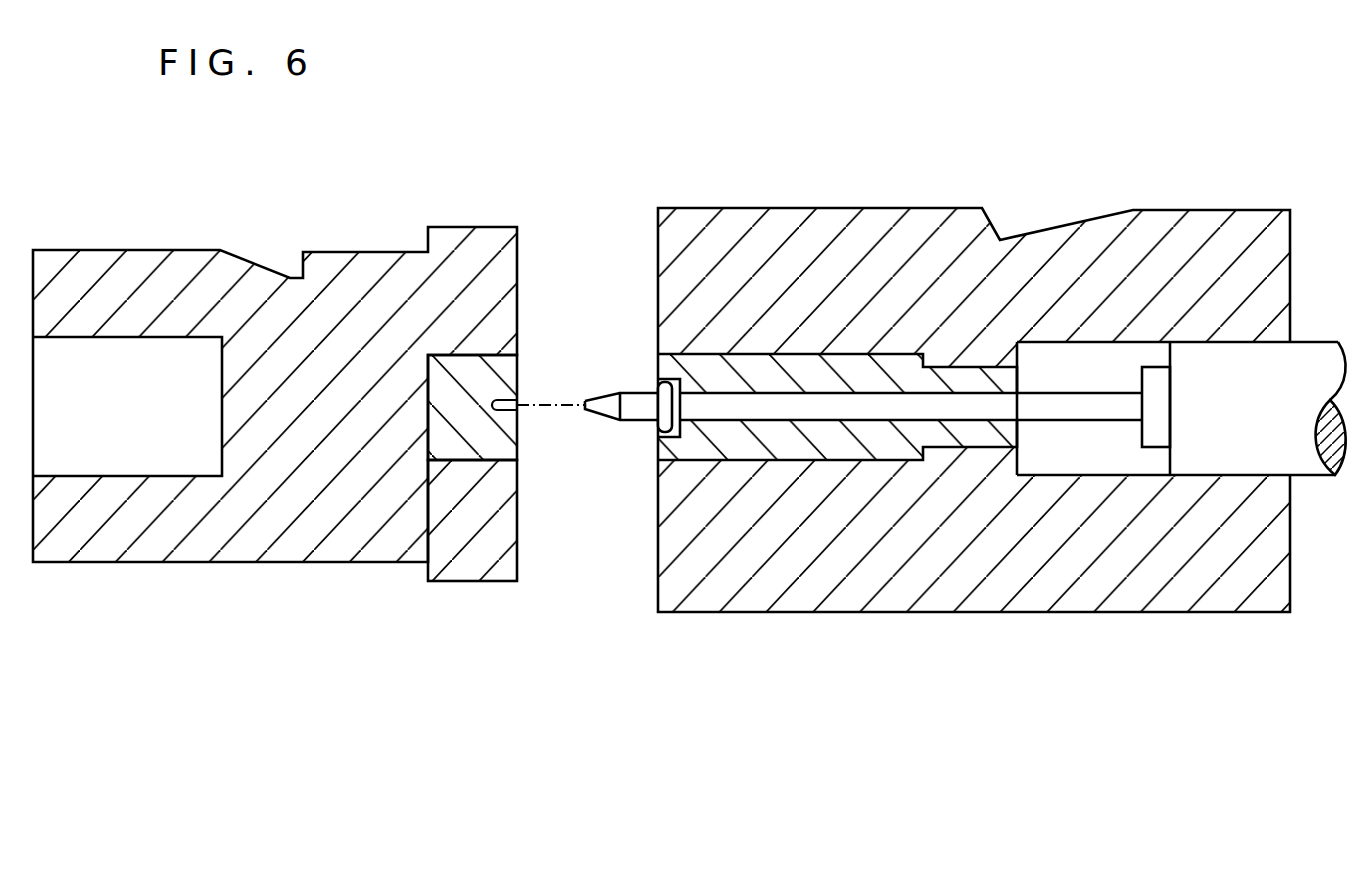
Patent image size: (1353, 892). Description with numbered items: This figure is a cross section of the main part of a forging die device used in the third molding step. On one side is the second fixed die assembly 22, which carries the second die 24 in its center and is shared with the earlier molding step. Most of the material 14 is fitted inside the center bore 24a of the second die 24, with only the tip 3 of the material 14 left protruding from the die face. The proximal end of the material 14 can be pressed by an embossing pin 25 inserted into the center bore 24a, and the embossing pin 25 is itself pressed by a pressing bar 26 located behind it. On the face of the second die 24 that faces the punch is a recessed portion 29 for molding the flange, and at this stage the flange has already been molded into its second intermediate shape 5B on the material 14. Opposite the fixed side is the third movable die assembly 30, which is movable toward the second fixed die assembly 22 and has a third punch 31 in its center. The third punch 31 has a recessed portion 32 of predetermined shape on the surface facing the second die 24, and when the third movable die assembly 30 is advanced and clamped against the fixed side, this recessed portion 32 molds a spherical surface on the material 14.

The third movable die assembly 30 is at (166, 247).
The second fixed die assembly 22 is at (888, 203).
The material 14 is at (742, 392).
The tip 3 is at (612, 393).
The second intermediate shape 5B is at (656, 404).
The recessed portion 29 is at (667, 434).
The second die 24 is at (748, 452).
The center bore 24a is at (782, 420).
The embossing pin 25 is at (1073, 410).
The pressing bar 26 is at (1298, 453).
The third punch 31 is at (462, 448).
The recessed portion 32 is at (520, 410).